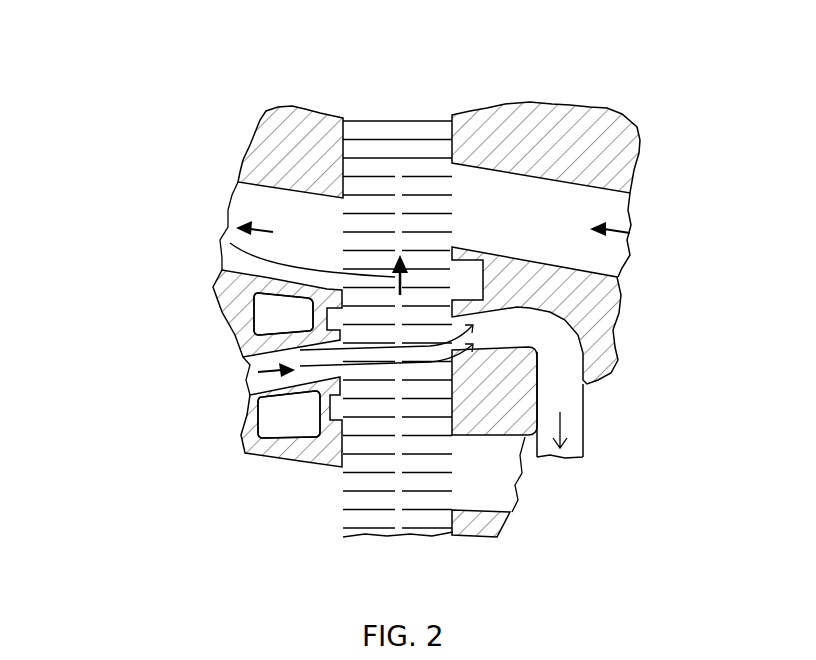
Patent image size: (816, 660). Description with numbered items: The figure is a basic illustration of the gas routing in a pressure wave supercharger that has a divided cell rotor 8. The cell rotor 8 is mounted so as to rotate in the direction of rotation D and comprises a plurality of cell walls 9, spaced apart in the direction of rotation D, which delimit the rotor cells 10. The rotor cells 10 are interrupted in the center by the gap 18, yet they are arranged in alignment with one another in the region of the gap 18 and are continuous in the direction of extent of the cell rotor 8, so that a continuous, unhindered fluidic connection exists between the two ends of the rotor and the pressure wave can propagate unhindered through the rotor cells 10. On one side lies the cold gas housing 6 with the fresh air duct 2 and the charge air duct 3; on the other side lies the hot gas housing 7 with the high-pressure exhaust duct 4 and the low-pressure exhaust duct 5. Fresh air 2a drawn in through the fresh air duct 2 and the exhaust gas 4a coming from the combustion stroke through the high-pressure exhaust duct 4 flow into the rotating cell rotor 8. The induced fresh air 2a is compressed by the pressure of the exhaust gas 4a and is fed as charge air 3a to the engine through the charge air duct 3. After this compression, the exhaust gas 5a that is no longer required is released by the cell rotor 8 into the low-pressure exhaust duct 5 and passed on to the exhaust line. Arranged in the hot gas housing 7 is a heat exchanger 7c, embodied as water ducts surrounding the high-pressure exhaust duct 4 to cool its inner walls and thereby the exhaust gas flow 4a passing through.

The fresh air duct 2 is at (630, 200).
The fresh air 2a is at (610, 232).
The charge air duct 3 is at (583, 393).
The charge air 3a is at (560, 425).
The high-pressure exhaust duct 4 is at (255, 364).
The high-pressure exhaust gas flow 4a is at (247, 393).
The low-pressure exhaust duct 5 is at (222, 242).
The low-pressure exhaust gas flow 5a is at (270, 225).
The cold gas housing 6 is at (588, 97).
The hot gas housing 7 is at (306, 97).
The heat exchanger 7c is at (267, 318).
The cell rotor 8 is at (413, 123).
The cell walls 9 is at (402, 160).
The rotor cells 10 is at (354, 153).
The gap 18 is at (398, 175).
The direction of rotation D is at (217, 237).